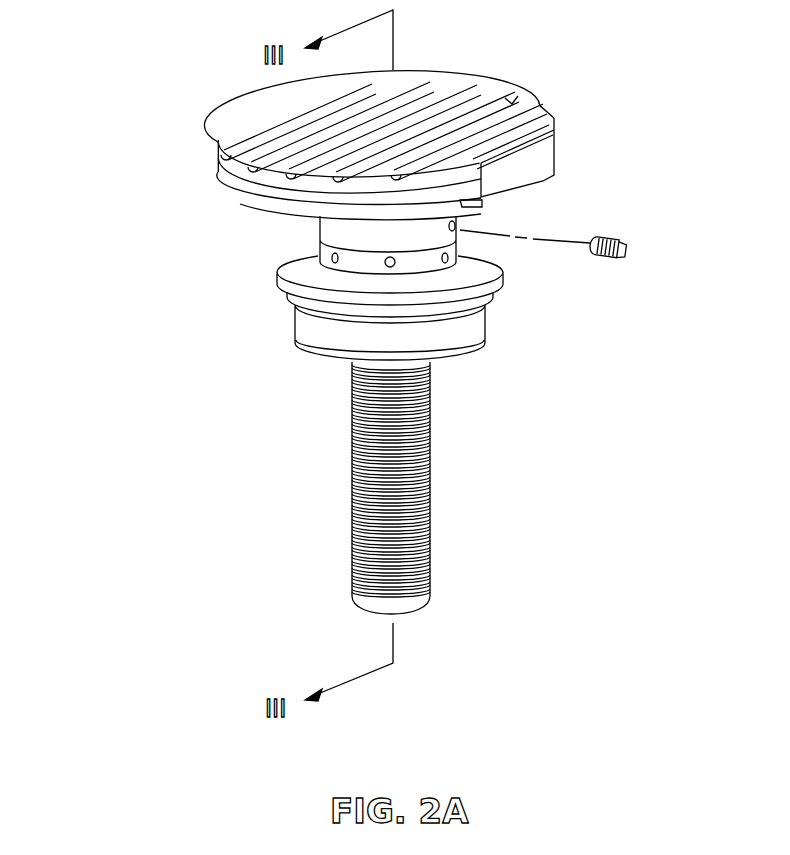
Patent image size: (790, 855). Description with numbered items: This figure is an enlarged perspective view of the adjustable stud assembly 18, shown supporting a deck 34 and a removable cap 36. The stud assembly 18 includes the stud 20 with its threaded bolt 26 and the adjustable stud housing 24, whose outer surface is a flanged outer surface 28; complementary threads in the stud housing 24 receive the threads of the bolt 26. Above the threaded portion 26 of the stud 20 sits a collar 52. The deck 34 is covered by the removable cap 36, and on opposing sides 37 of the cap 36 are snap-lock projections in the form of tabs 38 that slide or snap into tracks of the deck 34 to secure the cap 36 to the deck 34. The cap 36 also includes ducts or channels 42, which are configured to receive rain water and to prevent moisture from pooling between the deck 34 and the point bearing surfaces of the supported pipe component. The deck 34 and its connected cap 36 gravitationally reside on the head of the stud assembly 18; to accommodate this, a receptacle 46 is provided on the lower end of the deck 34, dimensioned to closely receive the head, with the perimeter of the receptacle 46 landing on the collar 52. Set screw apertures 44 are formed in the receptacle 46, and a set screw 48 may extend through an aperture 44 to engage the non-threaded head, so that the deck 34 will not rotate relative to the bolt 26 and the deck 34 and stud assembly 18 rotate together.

The stud assembly 18 is at (222, 497).
The stud 20 is at (308, 392).
The adjustable stud housing 24 is at (430, 345).
The threaded bolt 26 is at (360, 490).
The flanged outer surface 28 is at (503, 272).
The deck 34 is at (241, 109).
The removable cap 36 is at (188, 139).
The opposing sides 37 is at (540, 158).
The tabs 38 is at (476, 207).
The channels 42 is at (510, 103).
The set screw apertures 44 is at (458, 234).
The receptacle 46 is at (327, 247).
The set screw 48 is at (615, 237).
The collar 52 is at (333, 230).